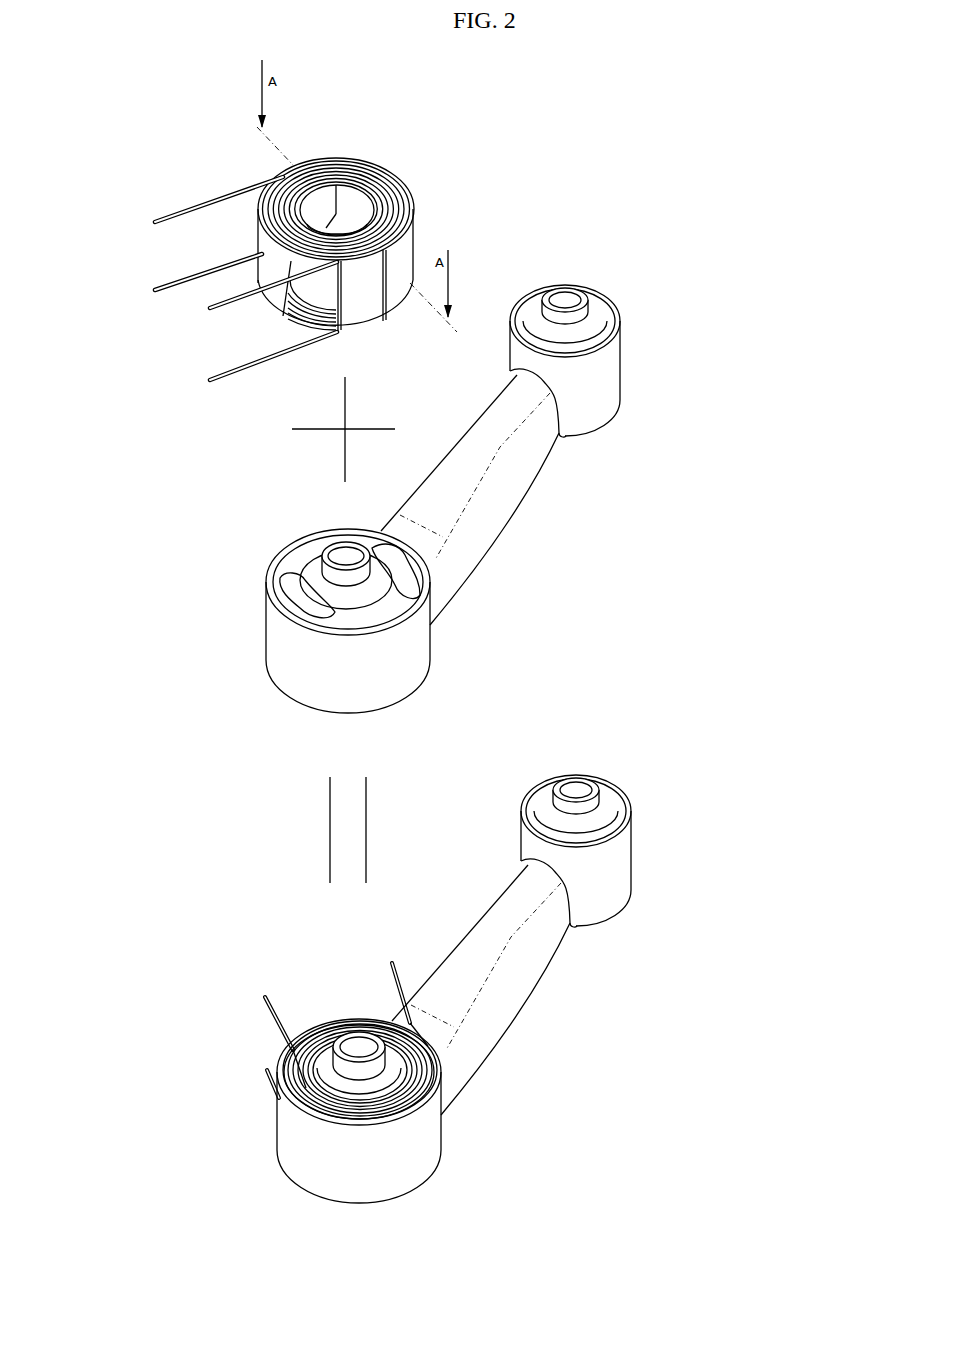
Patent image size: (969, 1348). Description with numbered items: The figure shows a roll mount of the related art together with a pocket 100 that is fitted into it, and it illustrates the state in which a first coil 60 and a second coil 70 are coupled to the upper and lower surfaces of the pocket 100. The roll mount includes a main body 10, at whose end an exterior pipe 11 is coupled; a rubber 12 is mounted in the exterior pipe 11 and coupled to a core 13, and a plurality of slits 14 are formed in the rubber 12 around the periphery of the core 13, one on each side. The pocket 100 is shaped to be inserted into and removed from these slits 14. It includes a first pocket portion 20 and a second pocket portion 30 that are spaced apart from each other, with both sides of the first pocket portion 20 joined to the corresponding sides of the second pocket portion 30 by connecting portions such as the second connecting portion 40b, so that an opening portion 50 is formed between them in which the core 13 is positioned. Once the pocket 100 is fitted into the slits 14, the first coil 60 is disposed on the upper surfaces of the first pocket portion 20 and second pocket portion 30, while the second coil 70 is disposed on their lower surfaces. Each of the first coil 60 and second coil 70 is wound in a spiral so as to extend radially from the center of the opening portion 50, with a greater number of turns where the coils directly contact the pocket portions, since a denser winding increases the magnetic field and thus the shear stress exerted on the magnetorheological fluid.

The pocket 100 is at (356, 232).
The main body 10 is at (487, 513).
The exterior pipe 11 is at (287, 648).
The rubber 12 is at (302, 565).
The core 13 is at (427, 597).
The slits 14 is at (288, 588).
The first pocket portion 20 is at (270, 255).
The second pocket portion 30 is at (408, 247).
The second connecting portion 40b is at (293, 267).
The opening portion 50 is at (346, 207).
The first coil 60 is at (187, 205).
The second coil 70 is at (178, 278).